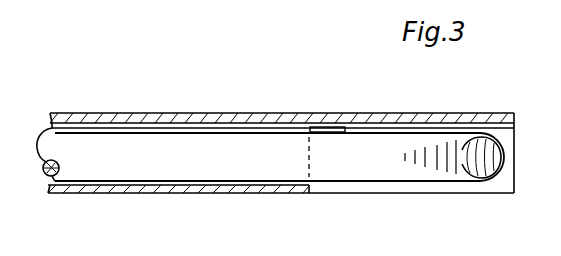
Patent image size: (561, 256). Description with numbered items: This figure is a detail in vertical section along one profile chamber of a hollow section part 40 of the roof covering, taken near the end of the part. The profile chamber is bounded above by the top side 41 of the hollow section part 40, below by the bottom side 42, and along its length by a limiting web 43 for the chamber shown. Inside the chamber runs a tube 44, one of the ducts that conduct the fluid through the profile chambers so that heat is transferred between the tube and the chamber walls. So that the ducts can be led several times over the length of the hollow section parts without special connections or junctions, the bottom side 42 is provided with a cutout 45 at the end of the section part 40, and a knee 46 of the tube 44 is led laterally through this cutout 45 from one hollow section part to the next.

The hollow section part 40 is at (281, 150).
The top side 41 is at (190, 113).
The bottom side 42 is at (170, 184).
The limiting web 43 is at (98, 128).
The tube 44 is at (112, 168).
The cutout 45 is at (346, 129).
The knee 46 is at (436, 175).